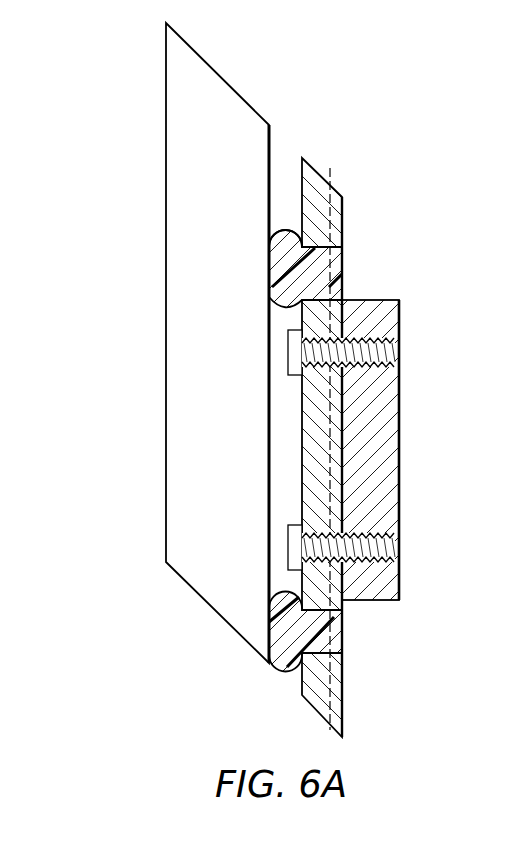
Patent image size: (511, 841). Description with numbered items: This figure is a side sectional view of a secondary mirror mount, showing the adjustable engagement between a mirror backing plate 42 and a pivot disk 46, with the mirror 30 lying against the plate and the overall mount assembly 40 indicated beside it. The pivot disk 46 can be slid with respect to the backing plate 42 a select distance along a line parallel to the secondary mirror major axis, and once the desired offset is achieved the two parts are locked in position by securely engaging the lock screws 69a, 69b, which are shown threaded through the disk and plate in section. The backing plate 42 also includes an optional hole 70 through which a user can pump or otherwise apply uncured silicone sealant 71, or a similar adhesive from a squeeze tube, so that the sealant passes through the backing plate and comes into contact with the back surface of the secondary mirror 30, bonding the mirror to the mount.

The panel 30 is at (166, 176).
The mounting assembly 40 is at (396, 165).
The backing plate 42 is at (322, 178).
The pivot disk 46 is at (400, 465).
The lock screw 69a is at (387, 363).
The lock screw 69b is at (388, 562).
The hole 70 is at (337, 265).
The silicone sealant 71 is at (285, 238).